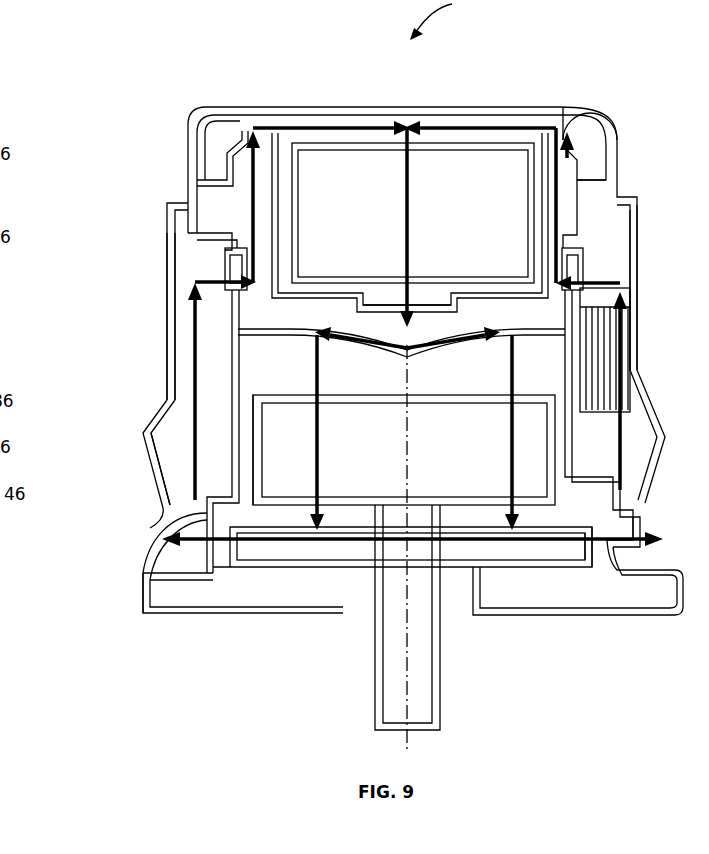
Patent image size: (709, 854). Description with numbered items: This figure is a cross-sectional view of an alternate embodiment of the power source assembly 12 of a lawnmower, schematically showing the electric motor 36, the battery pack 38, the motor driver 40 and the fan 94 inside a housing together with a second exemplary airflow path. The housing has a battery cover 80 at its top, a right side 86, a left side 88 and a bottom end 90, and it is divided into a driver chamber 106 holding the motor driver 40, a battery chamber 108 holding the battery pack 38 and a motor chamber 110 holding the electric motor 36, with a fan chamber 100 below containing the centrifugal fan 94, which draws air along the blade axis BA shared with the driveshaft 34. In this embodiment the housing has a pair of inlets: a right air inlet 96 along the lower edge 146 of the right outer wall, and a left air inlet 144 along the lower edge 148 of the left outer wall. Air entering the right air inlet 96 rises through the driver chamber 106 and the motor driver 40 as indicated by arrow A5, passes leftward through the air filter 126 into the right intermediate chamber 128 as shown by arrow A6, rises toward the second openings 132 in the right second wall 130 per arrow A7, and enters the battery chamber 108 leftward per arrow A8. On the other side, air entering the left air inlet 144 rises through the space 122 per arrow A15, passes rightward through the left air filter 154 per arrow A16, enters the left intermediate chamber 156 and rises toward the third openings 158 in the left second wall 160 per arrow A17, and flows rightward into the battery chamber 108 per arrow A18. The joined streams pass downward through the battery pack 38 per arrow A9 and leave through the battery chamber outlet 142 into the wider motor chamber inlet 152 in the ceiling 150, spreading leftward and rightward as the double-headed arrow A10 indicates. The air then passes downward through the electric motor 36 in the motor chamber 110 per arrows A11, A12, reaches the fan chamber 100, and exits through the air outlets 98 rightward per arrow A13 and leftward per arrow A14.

The power source assembly 12 is at (444, 20).
The driveshaft 34 is at (374, 670).
The electric motor 36 is at (253, 465).
The battery pack 38 is at (313, 143).
The motor driver 40 is at (613, 367).
The battery cover 80 is at (513, 107).
The right side 86 is at (615, 270).
The left side 88 is at (170, 265).
The bottom end 90 is at (178, 500).
The fan 94 is at (510, 570).
The air inlet 96 is at (643, 512).
The air outlet 98 is at (608, 550).
The fan chamber 100 is at (220, 563).
The driver chamber 106 is at (600, 458).
The battery chamber 108 is at (277, 155).
The motor chamber 110 is at (255, 365).
The space 122 is at (167, 388).
The air filter 126 is at (608, 250).
The right intermediate chamber 128 is at (590, 213).
The right second wall 130 is at (565, 150).
The second openings 132 is at (585, 113).
The battery chamber outlet 142 is at (383, 305).
The left air inlet 144 is at (165, 508).
The lower edge 146 is at (635, 517).
The lower edge 148 is at (155, 500).
The ceiling 150 is at (253, 325).
The motor chamber inlet 152 is at (432, 360).
The left air filter 154 is at (170, 230).
The left intermediate chamber 156 is at (217, 215).
The third openings 158 is at (248, 130).
The left second wall 160 is at (238, 133).
The blade axis BA is at (408, 660).
The arrow A5 is at (622, 445).
The arrow A6 is at (624, 282).
The arrow A7 is at (556, 230).
The arrow A8 is at (463, 128).
The arrow A9 is at (405, 165).
The double-headed arrow A10 is at (372, 350).
The arrow A11 is at (510, 437).
The arrow A12 is at (320, 480).
The arrow A13 is at (542, 543).
The arrow A14 is at (255, 545).
The arrow A15 is at (200, 432).
The arrow A16 is at (228, 275).
The arrow A17 is at (238, 160).
The arrow A18 is at (358, 120).